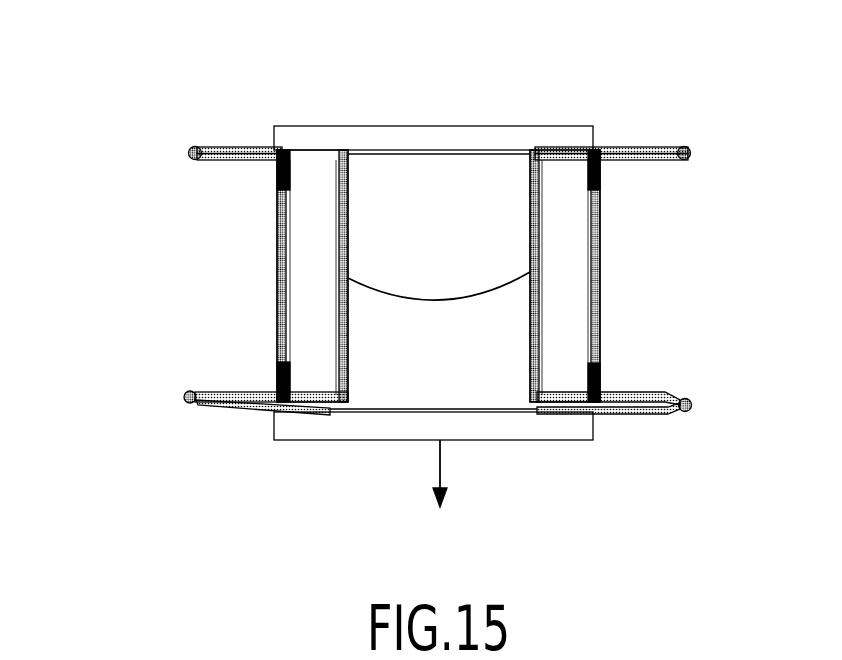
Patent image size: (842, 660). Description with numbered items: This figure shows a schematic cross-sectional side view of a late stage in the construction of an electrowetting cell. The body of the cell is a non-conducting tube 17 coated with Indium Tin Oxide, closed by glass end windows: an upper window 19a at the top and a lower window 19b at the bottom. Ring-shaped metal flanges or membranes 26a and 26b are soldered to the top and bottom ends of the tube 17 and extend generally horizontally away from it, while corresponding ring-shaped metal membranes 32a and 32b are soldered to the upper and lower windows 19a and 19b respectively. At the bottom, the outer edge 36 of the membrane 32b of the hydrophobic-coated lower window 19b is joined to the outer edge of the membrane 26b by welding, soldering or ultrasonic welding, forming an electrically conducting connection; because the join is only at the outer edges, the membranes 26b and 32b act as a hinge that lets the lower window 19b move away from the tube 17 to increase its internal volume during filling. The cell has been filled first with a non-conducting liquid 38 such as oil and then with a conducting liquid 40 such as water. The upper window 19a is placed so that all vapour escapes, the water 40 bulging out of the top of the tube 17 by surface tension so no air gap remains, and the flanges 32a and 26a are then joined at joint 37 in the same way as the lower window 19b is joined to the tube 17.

The non-conducting tube 17 is at (313, 268).
The upper end window 19a is at (477, 135).
The lower end window 19b is at (513, 440).
The upper metal membrane 26a is at (238, 161).
The lower metal membrane 26b is at (643, 162).
The upper window metal membrane 32a is at (233, 148).
The lower window metal membrane 32b is at (228, 412).
The outer edge 36 is at (170, 395).
The joint 37 is at (172, 147).
The non-conducting liquid 38 is at (460, 351).
The conducting liquid 40 is at (439, 252).